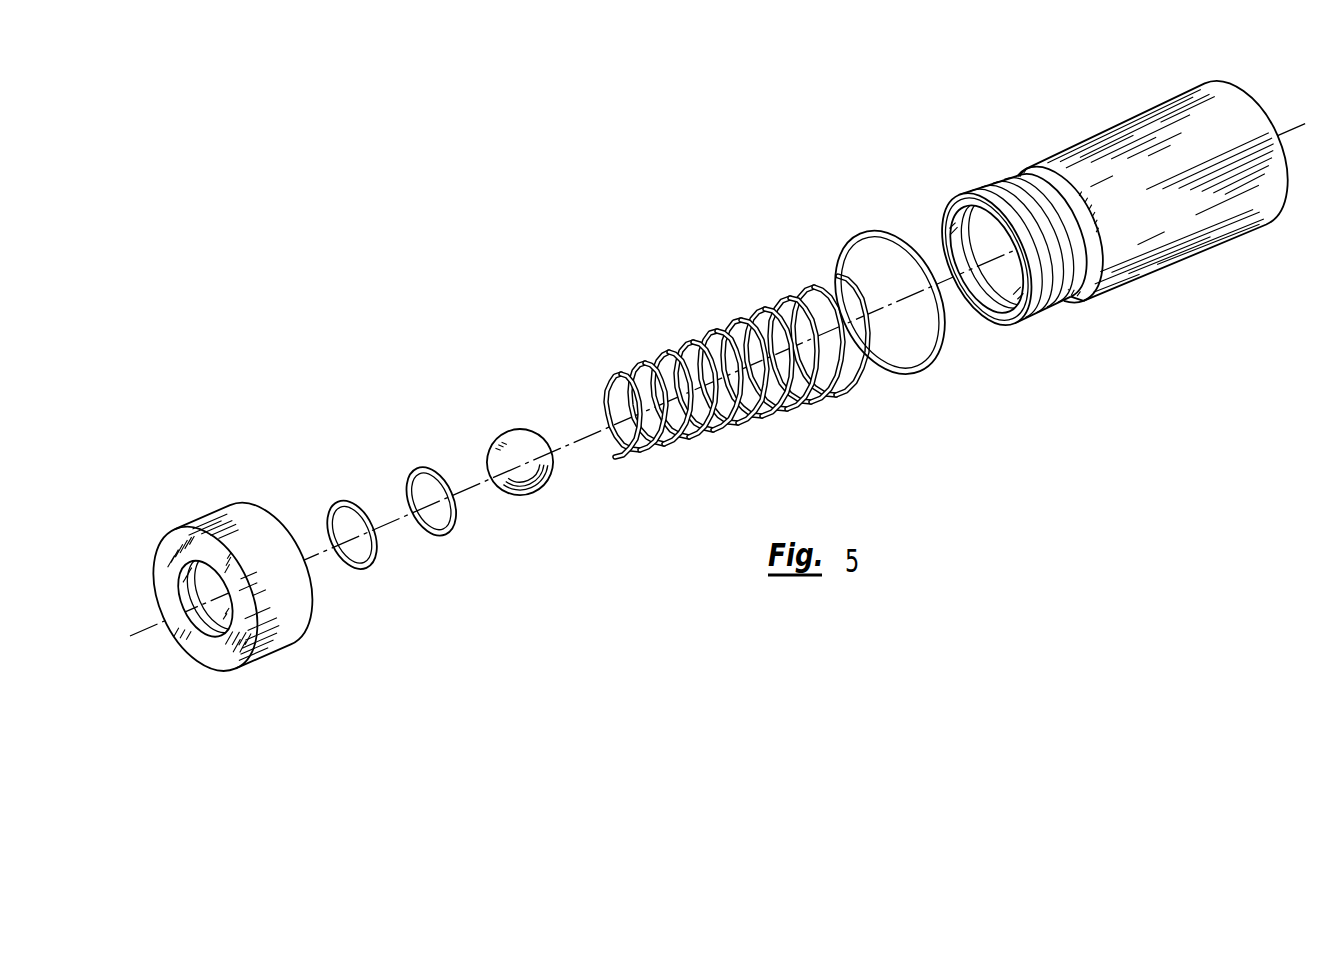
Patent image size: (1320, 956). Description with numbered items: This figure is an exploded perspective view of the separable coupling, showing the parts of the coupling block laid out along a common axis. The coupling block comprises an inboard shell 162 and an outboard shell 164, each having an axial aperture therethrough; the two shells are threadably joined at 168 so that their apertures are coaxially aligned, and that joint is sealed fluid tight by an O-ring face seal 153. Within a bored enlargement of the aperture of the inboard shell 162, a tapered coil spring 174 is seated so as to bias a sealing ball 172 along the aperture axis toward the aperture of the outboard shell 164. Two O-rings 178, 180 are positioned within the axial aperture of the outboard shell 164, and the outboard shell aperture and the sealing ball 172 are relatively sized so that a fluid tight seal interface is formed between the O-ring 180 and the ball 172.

The inboard shell 162 is at (1116, 214).
The outboard shell 164 is at (215, 512).
The threaded joint 168 is at (1056, 303).
The sealing ball 172 is at (507, 432).
The tapered coil spring 174 is at (684, 345).
The O-ring 178 is at (340, 503).
The O-ring 180 is at (419, 469).
The O-ring face seal 153 is at (861, 244).